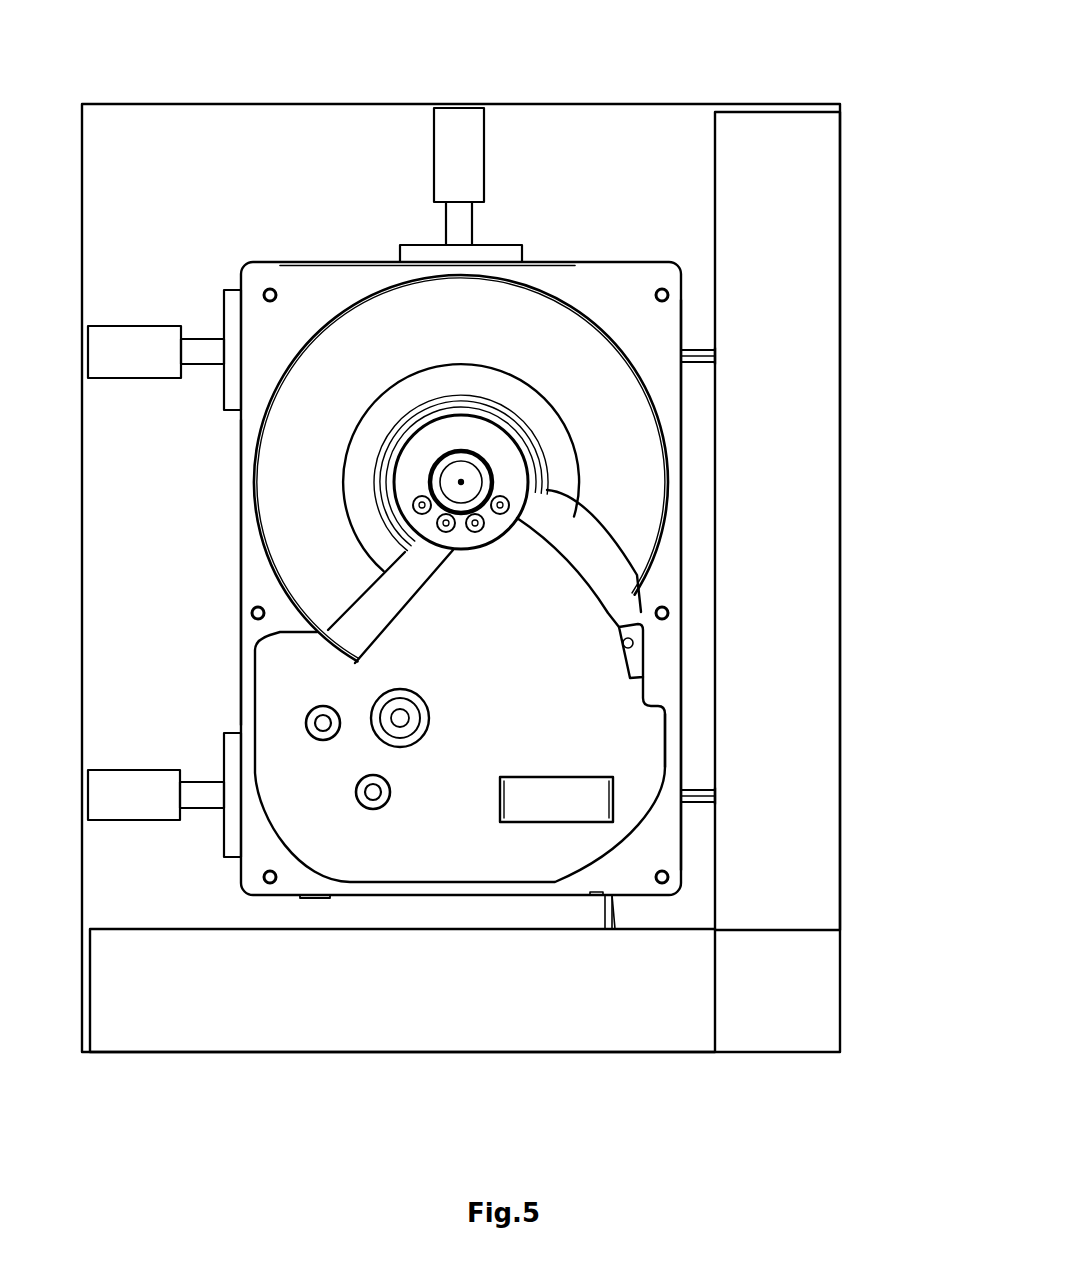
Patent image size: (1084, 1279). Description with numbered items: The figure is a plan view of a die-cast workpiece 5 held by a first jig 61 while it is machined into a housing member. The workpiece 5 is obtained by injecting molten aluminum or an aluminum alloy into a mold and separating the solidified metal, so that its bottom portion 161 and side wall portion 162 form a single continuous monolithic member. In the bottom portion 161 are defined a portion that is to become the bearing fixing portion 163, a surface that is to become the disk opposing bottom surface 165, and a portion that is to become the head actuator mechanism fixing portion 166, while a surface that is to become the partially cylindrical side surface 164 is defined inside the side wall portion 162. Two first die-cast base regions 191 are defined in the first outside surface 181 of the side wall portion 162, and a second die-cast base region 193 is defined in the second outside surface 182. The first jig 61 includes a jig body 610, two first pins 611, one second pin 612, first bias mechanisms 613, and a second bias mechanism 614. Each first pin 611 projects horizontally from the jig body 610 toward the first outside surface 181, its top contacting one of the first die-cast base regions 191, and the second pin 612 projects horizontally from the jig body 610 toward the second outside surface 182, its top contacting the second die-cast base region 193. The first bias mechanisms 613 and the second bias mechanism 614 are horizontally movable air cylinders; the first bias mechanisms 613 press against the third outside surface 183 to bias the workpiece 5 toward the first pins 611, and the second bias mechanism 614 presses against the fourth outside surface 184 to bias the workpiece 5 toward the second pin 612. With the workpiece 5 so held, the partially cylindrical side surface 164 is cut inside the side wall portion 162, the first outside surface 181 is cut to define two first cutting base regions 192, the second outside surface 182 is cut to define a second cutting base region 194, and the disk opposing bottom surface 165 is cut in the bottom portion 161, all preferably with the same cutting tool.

The workpiece 5 is at (328, 283).
The first jig 61 is at (765, 92).
The jig body 610 is at (653, 137).
The first pin 611 is at (698, 363).
The second pin 612 is at (603, 915).
The first bias mechanism 613 is at (232, 308).
The second bias mechanism 614 is at (417, 252).
The bottom portion 161 is at (625, 747).
The side wall portion 162 is at (667, 727).
The bearing fixing portion 163 is at (467, 492).
The partially cylindrical side surface 164 is at (662, 492).
The disk opposing bottom surface 165 is at (637, 545).
The head actuator mechanism fixing portion 166 is at (412, 718).
The first outside surface 181 is at (683, 662).
The second outside surface 182 is at (445, 898).
The third outside surface 183 is at (240, 592).
The fourth outside surface 184 is at (572, 257).
The first die-cast base region 191 is at (700, 350).
The first cutting base region 192 is at (682, 283).
The second die-cast base region 193 is at (613, 897).
The second cutting base region 194 is at (313, 897).